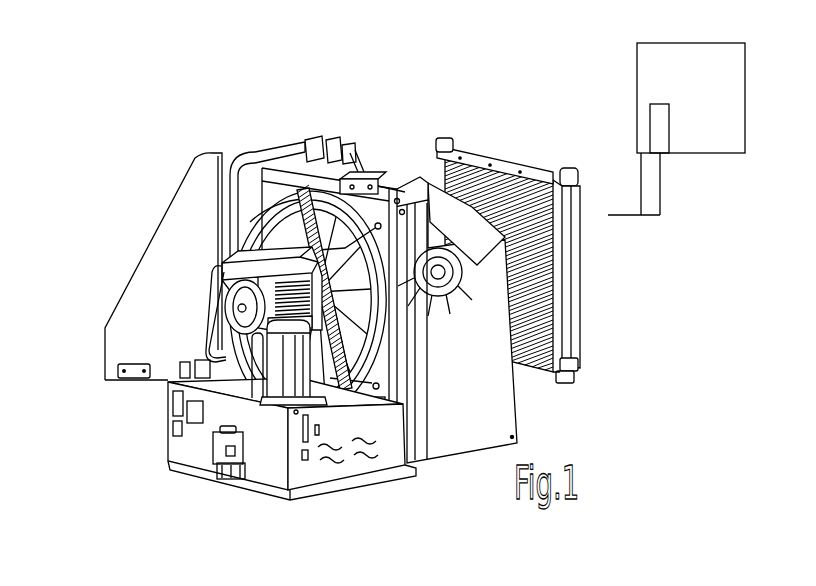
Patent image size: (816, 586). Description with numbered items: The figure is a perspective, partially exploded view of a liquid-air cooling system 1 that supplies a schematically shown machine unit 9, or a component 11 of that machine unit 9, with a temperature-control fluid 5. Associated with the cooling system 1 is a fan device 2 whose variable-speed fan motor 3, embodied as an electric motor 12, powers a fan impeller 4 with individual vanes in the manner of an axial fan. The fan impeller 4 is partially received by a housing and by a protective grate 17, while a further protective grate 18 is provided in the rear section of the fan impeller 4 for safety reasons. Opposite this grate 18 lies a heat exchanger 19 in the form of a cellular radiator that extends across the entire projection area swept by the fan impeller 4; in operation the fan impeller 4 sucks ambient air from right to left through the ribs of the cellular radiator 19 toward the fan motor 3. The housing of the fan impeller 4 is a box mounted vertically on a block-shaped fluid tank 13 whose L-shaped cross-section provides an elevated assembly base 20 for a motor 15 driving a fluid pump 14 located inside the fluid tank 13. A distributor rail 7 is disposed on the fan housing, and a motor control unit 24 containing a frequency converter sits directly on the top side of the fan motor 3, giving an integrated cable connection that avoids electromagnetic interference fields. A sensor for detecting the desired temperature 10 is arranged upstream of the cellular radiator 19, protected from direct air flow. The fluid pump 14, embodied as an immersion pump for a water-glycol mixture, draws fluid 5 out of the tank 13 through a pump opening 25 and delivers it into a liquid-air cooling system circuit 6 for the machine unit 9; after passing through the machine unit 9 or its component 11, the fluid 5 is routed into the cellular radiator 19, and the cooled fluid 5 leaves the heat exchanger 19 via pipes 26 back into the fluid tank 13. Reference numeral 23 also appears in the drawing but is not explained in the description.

The liquid-air cooling system 1 is at (94, 273).
The fan device 2 is at (333, 303).
The fan motor 3 is at (243, 306).
The fan impeller 4 is at (479, 208).
The fluid 5 is at (328, 465).
The liquid-air cooling system circuit 6 is at (655, 240).
The distributor rail 7 is at (572, 575).
The machine unit 9 is at (648, 161).
The sensor for detecting the desired temperature 10 is at (183, 357).
The component of a machine unit 11 is at (663, 133).
The electric motor 12 is at (207, 269).
The fluid tank 13 is at (258, 468).
The fluid pump 14 is at (277, 461).
The motor 15 is at (250, 328).
The protective grate 17 is at (390, 322).
The protective grate 18 is at (242, 263).
The heat exchanger 19 is at (549, 169).
The assembly base 20 is at (318, 398).
The line 23 is at (440, 571).
The motor control unit 24 is at (262, 212).
The pump opening 25 is at (257, 398).
The pipes 26 is at (266, 140).